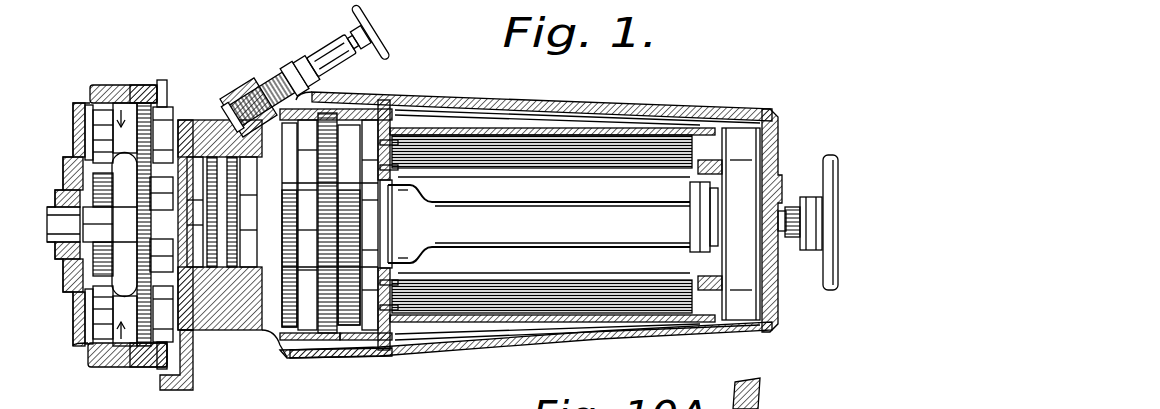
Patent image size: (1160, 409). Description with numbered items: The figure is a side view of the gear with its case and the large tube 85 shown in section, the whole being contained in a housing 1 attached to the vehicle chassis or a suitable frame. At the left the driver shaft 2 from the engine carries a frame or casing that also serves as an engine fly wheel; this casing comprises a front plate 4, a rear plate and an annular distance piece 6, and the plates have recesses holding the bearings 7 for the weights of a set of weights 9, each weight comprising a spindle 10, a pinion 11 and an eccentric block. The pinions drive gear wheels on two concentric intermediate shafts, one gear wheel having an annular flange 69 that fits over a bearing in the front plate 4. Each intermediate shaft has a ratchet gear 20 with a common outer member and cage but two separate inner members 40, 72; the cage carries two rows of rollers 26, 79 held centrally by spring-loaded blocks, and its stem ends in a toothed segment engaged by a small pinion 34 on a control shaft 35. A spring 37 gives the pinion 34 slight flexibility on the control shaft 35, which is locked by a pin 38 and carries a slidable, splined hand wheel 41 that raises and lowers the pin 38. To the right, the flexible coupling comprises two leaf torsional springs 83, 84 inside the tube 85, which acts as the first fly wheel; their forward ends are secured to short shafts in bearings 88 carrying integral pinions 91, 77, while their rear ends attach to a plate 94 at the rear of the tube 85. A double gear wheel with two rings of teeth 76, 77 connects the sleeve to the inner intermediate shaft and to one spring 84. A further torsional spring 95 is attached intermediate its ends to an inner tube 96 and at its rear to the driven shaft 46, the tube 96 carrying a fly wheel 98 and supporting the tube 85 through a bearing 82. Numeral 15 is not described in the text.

The housing 1 is at (585, 107).
The driver shaft 2 is at (53, 247).
The front plate 4 is at (88, 110).
The annular distance piece 6 is at (143, 82).
The bearings 7 is at (88, 137).
The set of weights 9 is at (120, 85).
The spindle 10 is at (100, 147).
The pinion 11 is at (143, 367).
The casing flange 15 is at (275, 357).
The ratchet gear 20 is at (228, 333).
The rollers 26 is at (200, 113).
The pinion 34 is at (255, 97).
The control shaft 35 is at (358, 56).
The spring 37 is at (275, 80).
The pin 38 is at (322, 50).
The inner member 40 is at (210, 333).
The hand wheel 41 is at (373, 27).
The driven shaft 46 is at (830, 177).
The annular flange 69 is at (85, 193).
The inner member 72 is at (248, 337).
The member of double gear wheel 76 is at (305, 340).
The pinion 77 is at (350, 340).
The rollers 79 is at (238, 127).
The bearing 82 is at (690, 188).
The torsional spring 83 is at (527, 152).
The torsional spring 84 is at (438, 300).
The tube 85 is at (470, 130).
The bearings 88 is at (380, 110).
The pinion 91 is at (332, 123).
The plate 94 is at (715, 322).
The torsional spring 95 is at (795, 237).
The tube 96 is at (539, 224).
The fly wheel 98 is at (740, 150).